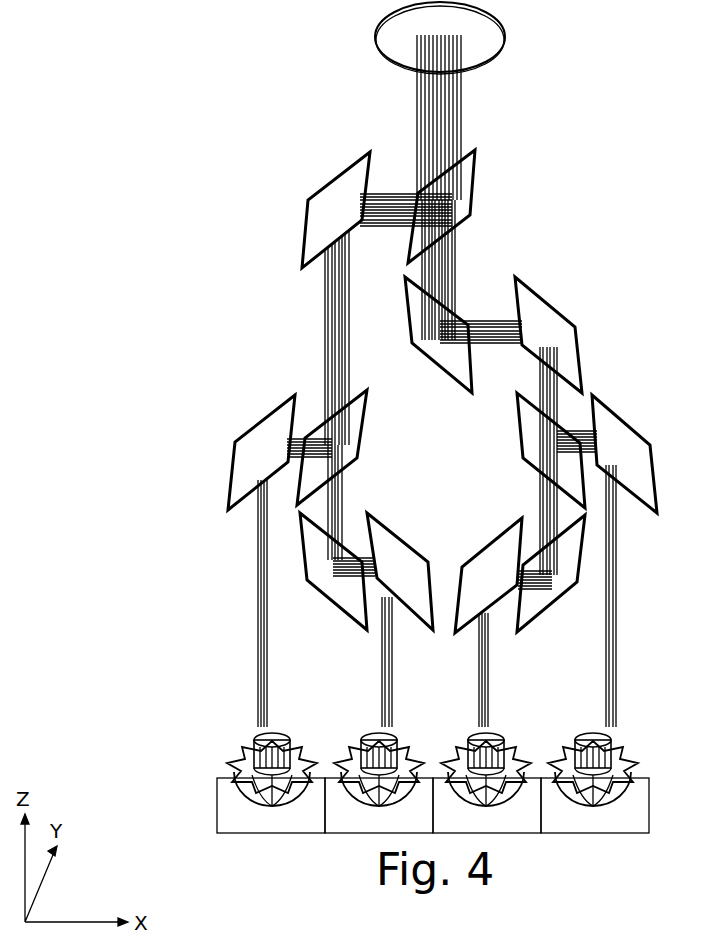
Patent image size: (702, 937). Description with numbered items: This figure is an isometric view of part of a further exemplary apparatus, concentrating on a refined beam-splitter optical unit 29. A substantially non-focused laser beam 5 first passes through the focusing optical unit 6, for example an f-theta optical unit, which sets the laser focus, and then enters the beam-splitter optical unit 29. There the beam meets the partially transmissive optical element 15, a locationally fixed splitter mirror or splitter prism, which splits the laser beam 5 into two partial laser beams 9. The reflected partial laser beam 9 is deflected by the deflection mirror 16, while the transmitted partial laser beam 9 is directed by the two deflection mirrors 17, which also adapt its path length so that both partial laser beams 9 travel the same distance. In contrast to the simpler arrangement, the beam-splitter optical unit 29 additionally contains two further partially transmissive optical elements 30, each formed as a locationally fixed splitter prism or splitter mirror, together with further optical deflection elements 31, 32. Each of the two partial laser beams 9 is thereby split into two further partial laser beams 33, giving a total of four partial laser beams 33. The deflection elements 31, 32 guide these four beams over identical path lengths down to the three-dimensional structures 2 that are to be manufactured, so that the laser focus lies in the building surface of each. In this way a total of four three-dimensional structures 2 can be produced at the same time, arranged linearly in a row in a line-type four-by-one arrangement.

The three-dimensional structure 2 is at (240, 750).
The laser beam 5 is at (437, 100).
The focusing optical unit 6 is at (487, 32).
The partial laser beam 9 is at (388, 215).
The partially transmissive optical element 15 is at (462, 170).
The deflection mirror 16 is at (320, 220).
The deflection mirror 17 is at (545, 320).
The beam-splitter optical unit 29 is at (585, 215).
The partially transmissive optical element 30 is at (355, 405).
The optical deflection element 31 is at (245, 466).
The optical deflection element 32 is at (345, 555).
The further partial laser beam 33 is at (262, 628).